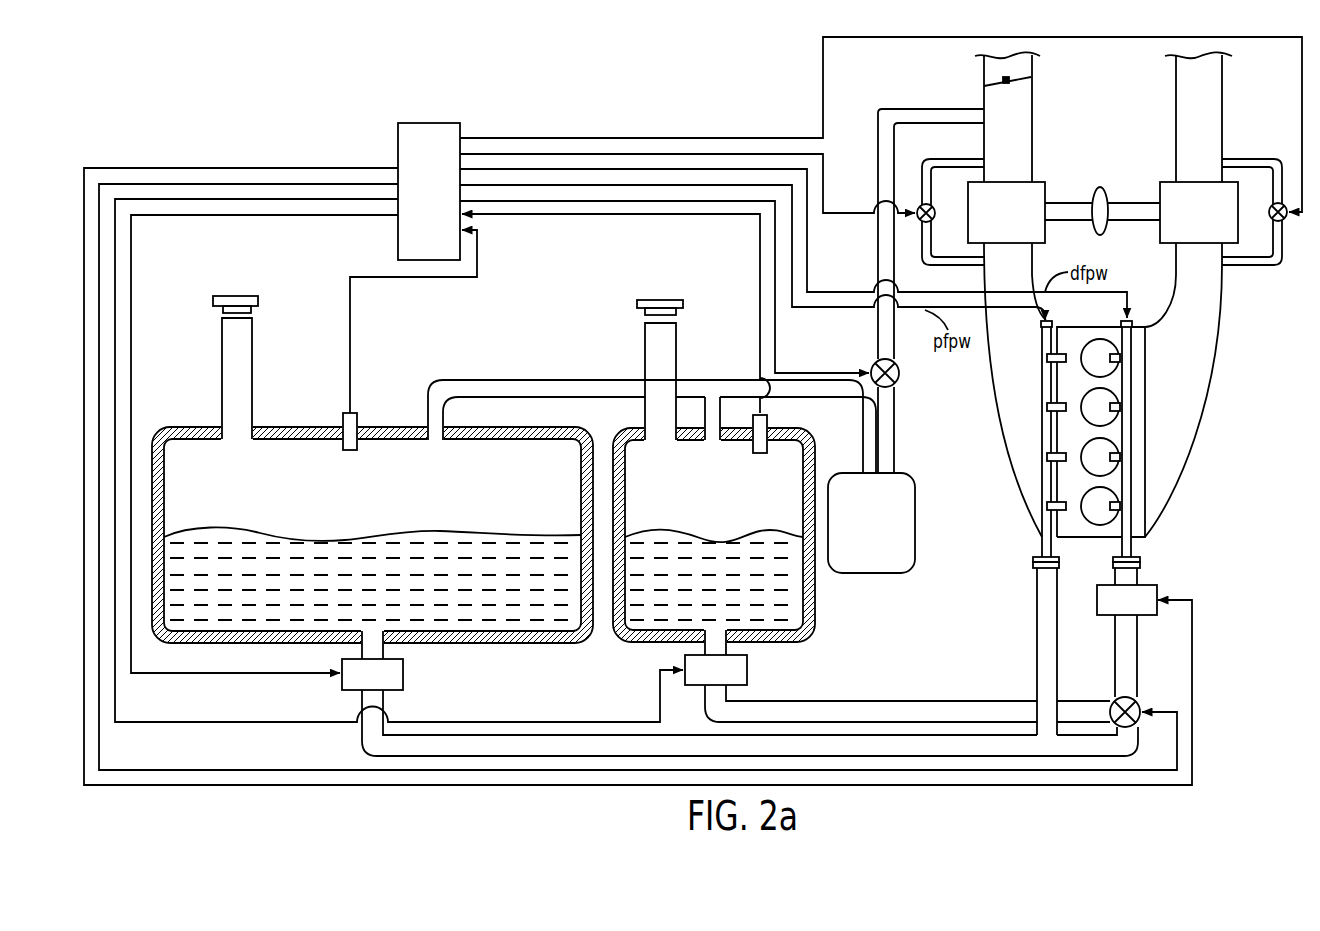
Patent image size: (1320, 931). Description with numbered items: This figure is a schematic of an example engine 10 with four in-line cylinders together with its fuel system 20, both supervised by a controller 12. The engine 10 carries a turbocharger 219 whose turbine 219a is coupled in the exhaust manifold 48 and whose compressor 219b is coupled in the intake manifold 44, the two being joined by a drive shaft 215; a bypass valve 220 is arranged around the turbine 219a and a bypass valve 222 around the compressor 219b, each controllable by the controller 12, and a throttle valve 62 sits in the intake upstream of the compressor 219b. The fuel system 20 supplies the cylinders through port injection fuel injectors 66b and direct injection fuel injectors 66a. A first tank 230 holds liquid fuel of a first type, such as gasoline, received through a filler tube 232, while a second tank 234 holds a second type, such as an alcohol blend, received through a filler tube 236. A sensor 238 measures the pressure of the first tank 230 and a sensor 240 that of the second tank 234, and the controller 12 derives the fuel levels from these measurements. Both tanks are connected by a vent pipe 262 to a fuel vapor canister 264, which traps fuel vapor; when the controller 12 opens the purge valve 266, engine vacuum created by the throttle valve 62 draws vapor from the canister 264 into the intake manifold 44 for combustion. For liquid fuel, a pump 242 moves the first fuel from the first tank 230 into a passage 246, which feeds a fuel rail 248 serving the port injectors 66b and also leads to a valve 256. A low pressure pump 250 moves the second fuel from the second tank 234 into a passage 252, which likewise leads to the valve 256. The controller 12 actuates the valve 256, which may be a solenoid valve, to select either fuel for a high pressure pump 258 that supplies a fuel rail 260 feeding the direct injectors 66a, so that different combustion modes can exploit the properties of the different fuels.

The engine 10 is at (1258, 430).
The controller 12 is at (434, 123).
The fuel system 20 is at (289, 131).
The intake manifold 44 is at (1023, 351).
The exhaust manifold 48 is at (1200, 354).
The throttle valve 62 is at (1003, 80).
The direct injection fuel injector 66a is at (1118, 507).
The port injection fuel injector 66b is at (1047, 506).
The drive shaft 215 is at (1130, 222).
The turbocharger 219 is at (1117, 162).
The turbine 219a is at (1217, 222).
The compressor 219b is at (1024, 222).
The bypass valve 220 is at (1285, 222).
The bypass valve 222 is at (934, 220).
The first tank 230 is at (265, 426).
The filler tube 232 is at (253, 338).
The second tank 234 is at (633, 427).
The filler tube 236 is at (643, 363).
The sensor 238 is at (355, 410).
The sensor 240 is at (767, 418).
The pump 242 is at (403, 680).
The passage 246 is at (360, 737).
The fuel rail 248 is at (1040, 541).
The low pressure pump 250 is at (747, 676).
The passage 252 is at (880, 700).
The valve 256 is at (1143, 700).
The high pressure pump 258 is at (1150, 583).
The fuel rail 260 is at (1132, 383).
The vent pipe 262 is at (488, 378).
The fuel vapor canister 264 is at (915, 513).
The purge valve 266 is at (900, 377).